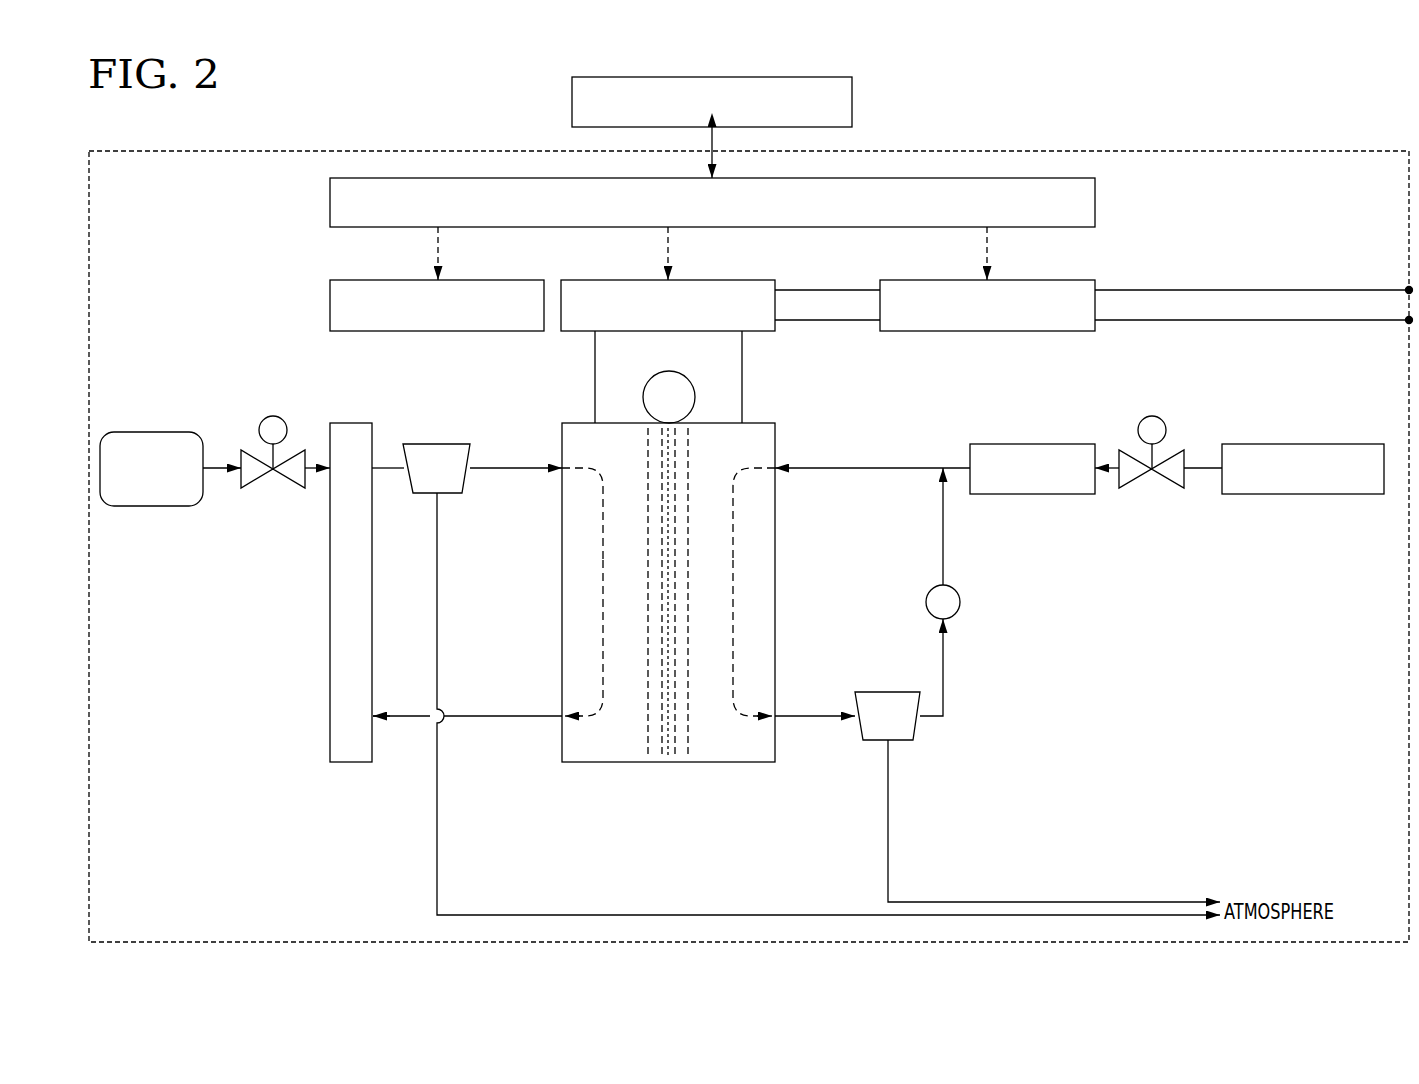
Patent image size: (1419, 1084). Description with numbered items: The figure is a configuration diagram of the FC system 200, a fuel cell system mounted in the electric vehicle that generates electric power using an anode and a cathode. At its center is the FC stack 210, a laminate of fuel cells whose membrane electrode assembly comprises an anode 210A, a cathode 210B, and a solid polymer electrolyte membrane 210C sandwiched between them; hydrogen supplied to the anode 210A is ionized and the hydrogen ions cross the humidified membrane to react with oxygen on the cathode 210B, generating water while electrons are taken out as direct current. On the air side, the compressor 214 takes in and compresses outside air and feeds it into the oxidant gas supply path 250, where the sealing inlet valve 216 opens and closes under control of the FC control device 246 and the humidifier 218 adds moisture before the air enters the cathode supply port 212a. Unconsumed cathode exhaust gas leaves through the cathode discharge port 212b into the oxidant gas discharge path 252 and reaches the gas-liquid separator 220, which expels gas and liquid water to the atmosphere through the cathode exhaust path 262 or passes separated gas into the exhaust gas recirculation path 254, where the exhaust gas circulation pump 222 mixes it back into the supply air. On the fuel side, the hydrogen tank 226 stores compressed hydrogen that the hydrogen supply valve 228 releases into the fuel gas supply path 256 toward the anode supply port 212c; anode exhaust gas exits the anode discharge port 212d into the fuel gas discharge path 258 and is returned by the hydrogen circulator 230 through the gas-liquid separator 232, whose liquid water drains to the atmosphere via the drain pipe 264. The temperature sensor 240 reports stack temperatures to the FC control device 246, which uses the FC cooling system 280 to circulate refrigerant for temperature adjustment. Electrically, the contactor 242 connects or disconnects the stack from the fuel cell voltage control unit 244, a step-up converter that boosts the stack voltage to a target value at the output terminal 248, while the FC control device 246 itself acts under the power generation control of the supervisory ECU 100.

The supervisory ECU 100 is at (852, 102).
The FC system 200 is at (1338, 151).
The FC stack 210 is at (777, 585).
The anode 210A is at (653, 762).
The cathode 210B is at (683, 762).
The solid polymer electrolyte membrane 210C is at (668, 762).
The cathode supply port 212a is at (780, 466).
The cathode discharge port 212b is at (778, 714).
The anode supply port 212c is at (558, 466).
The anode discharge port 212d is at (560, 714).
The compressor 214 is at (1320, 444).
The sealing inlet valve 216 is at (1160, 480).
The humidifier 218 is at (1030, 444).
The gas-liquid separator 220 is at (888, 691).
The exhaust gas circulation pump 222 is at (961, 602).
The hydrogen tank 226 is at (140, 432).
The hydrogen supply valve 228 is at (285, 479).
The hydrogen circulator 230 is at (352, 423).
The gas-liquid separator 232 is at (425, 495).
The temperature sensor 240 is at (672, 373).
The contactor 242 is at (708, 280).
The fuel cell voltage control unit 244 is at (1025, 280).
The FC control device 246 is at (1095, 203).
The output terminal 248 is at (1403, 287).
The oxidant gas supply path 250 is at (1200, 466).
The oxidant gas discharge path 252 is at (810, 719).
The exhaust gas recirculation path 254 is at (945, 673).
The fuel gas supply path 256 is at (216, 472).
The fuel gas discharge path 258 is at (403, 719).
The cathode exhaust path 262 is at (889, 812).
The drain pipe 264 is at (520, 913).
The FC cooling system 280 is at (478, 280).